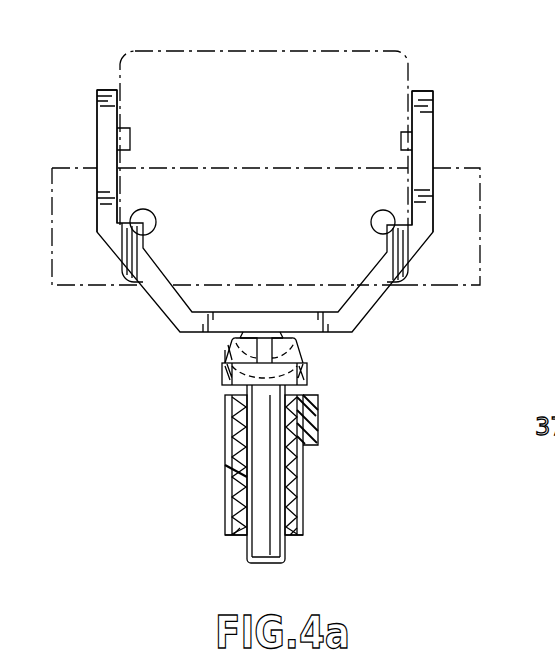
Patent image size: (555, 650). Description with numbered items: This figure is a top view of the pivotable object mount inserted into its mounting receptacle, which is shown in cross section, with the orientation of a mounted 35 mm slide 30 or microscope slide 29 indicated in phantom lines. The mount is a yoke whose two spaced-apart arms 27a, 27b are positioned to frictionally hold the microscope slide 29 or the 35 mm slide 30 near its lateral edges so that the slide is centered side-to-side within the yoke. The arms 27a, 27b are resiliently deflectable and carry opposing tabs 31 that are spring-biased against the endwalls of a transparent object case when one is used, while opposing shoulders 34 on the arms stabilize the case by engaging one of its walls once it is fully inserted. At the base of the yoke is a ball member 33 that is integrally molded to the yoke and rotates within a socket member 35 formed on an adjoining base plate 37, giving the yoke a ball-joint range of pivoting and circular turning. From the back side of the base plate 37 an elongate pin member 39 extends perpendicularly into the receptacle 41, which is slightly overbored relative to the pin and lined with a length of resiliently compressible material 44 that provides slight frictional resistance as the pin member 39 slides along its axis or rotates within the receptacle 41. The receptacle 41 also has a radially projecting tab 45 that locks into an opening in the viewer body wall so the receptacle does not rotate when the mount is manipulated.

The yoke arm 27a is at (103, 135).
The yoke arm 27b is at (427, 107).
The microscope slide 29 is at (460, 224).
The 35 mm slide 30 is at (347, 75).
The tab 31 is at (132, 137).
The ball member 33 is at (265, 352).
The shoulder 34 is at (157, 213).
The socket member 35 is at (227, 350).
The base plate 37 is at (240, 365).
The pin member 39 is at (275, 552).
The receptacle 41 is at (225, 480).
The resiliently compressible material 44 is at (240, 537).
The tab 45 is at (312, 415).